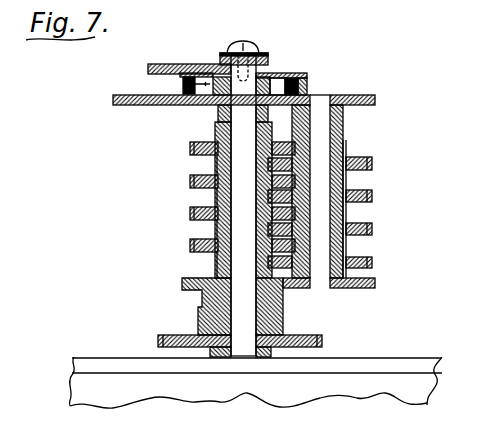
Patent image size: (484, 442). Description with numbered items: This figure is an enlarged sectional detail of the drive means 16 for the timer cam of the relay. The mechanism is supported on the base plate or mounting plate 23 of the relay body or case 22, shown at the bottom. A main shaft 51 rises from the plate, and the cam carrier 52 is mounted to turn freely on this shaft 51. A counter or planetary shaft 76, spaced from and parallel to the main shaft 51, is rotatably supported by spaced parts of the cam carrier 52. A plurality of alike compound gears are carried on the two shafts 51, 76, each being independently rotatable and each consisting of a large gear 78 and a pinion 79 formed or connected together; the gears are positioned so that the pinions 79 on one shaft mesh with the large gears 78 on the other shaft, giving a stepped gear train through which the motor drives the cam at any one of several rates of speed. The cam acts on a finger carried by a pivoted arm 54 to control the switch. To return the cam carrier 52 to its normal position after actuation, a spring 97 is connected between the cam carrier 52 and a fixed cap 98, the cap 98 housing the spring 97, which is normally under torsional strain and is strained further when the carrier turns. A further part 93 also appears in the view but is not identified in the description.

The drive means 16 is at (374, 199).
The body or case 22 is at (93, 388).
The base plate or mounting plate 23 is at (72, 362).
The shaft 51 is at (247, 227).
The cam carrier 52 is at (375, 283).
The arm 54 is at (322, 341).
The planetary shaft 76 is at (322, 122).
The large gear 78 is at (193, 181).
The pinion 79 is at (218, 160).
The lever plate 93 is at (170, 70).
The spring 97 is at (303, 80).
The cap 98 is at (273, 75).